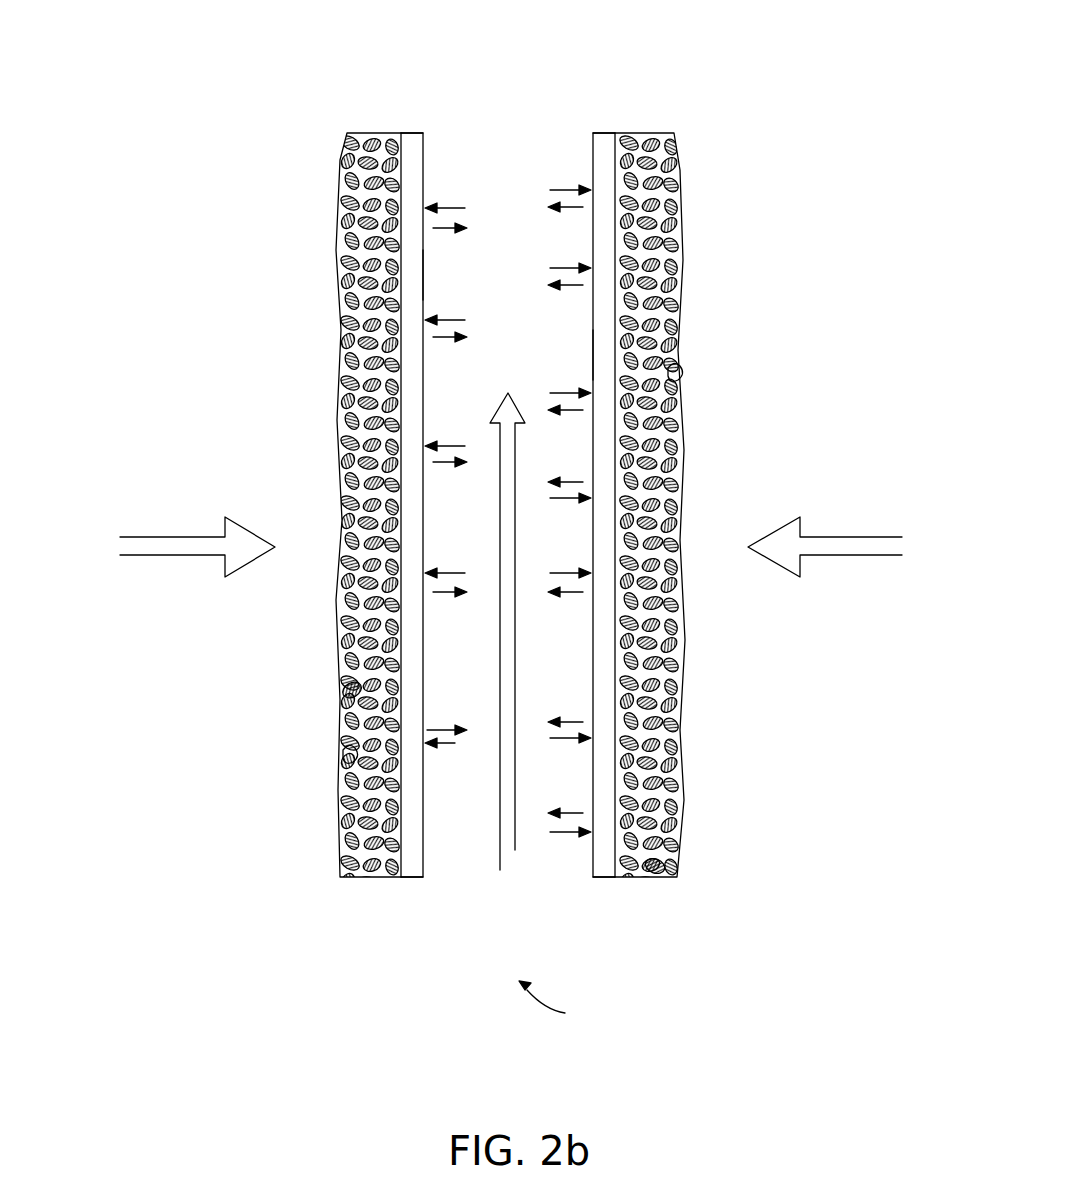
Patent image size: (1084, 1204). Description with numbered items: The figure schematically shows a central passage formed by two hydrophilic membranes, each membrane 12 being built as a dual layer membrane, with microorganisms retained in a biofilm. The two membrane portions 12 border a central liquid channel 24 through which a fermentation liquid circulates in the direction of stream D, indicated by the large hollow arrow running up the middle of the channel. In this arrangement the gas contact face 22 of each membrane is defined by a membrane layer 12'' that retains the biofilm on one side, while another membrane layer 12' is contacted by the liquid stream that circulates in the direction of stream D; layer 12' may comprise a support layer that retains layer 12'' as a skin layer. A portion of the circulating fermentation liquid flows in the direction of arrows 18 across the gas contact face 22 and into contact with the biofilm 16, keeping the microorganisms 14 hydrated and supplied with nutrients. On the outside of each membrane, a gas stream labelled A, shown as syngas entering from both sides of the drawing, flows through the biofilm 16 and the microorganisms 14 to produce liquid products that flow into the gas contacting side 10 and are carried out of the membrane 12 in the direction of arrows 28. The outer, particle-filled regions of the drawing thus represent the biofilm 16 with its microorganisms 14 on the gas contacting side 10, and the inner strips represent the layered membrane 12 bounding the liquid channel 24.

The gas contacting side 10 is at (338, 675).
The membrane 12 is at (508, 450).
The membrane layer 12' is at (519, 105).
The membrane layer 12'' is at (519, 906).
The microorganisms 14 is at (338, 700).
The biofilm 16 is at (331, 757).
The arrows 18 is at (453, 208).
The gas contact face 22 is at (424, 278).
The central liquid channel 24 is at (559, 1006).
The arrows 28 is at (447, 338).
The gas flow A is at (165, 558).
The stream D is at (514, 850).